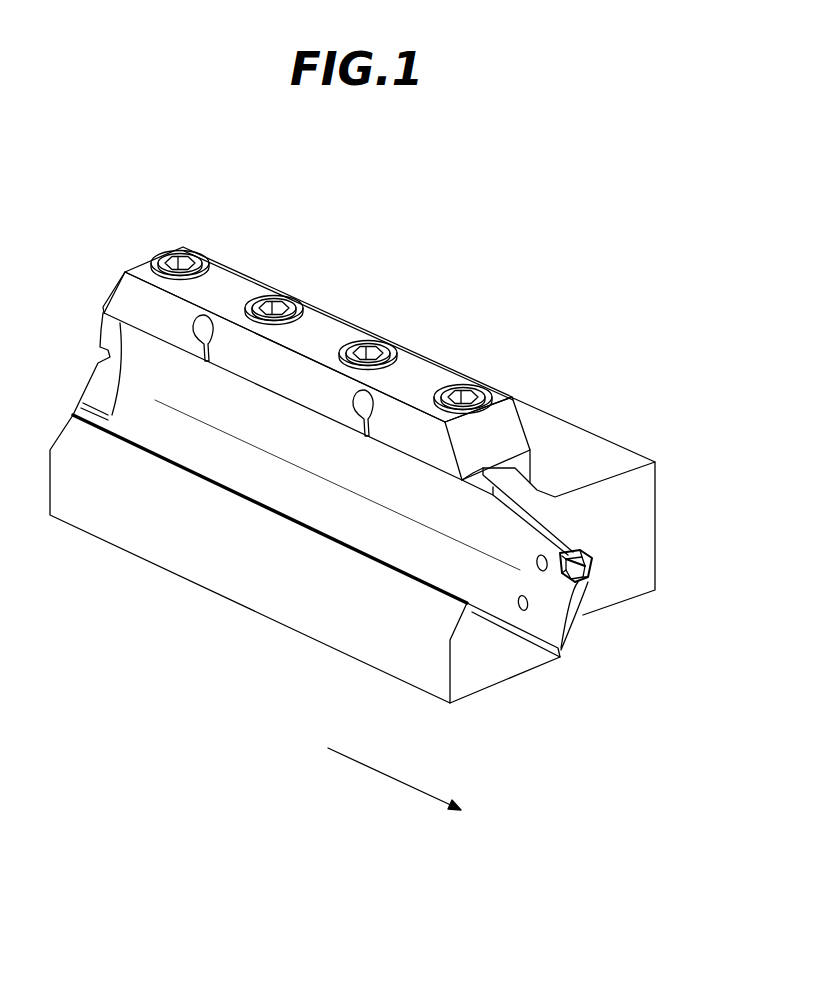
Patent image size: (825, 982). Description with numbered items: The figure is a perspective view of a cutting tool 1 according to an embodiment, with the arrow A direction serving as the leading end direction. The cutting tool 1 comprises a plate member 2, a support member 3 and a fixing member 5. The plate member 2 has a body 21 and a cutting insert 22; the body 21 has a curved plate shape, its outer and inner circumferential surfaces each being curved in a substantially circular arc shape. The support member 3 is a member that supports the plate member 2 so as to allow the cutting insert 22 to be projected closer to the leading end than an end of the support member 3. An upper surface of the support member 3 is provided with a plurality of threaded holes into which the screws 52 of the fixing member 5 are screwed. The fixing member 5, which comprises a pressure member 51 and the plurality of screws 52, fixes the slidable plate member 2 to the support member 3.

The cutting tool 1 is at (677, 303).
The plate member 2 is at (745, 513).
The support member 3 is at (617, 463).
The fixing member 5 is at (137, 262).
The body 21 is at (586, 593).
The cutting insert 22 is at (590, 556).
The pressure member 51 is at (237, 277).
The screws 52 is at (201, 260).